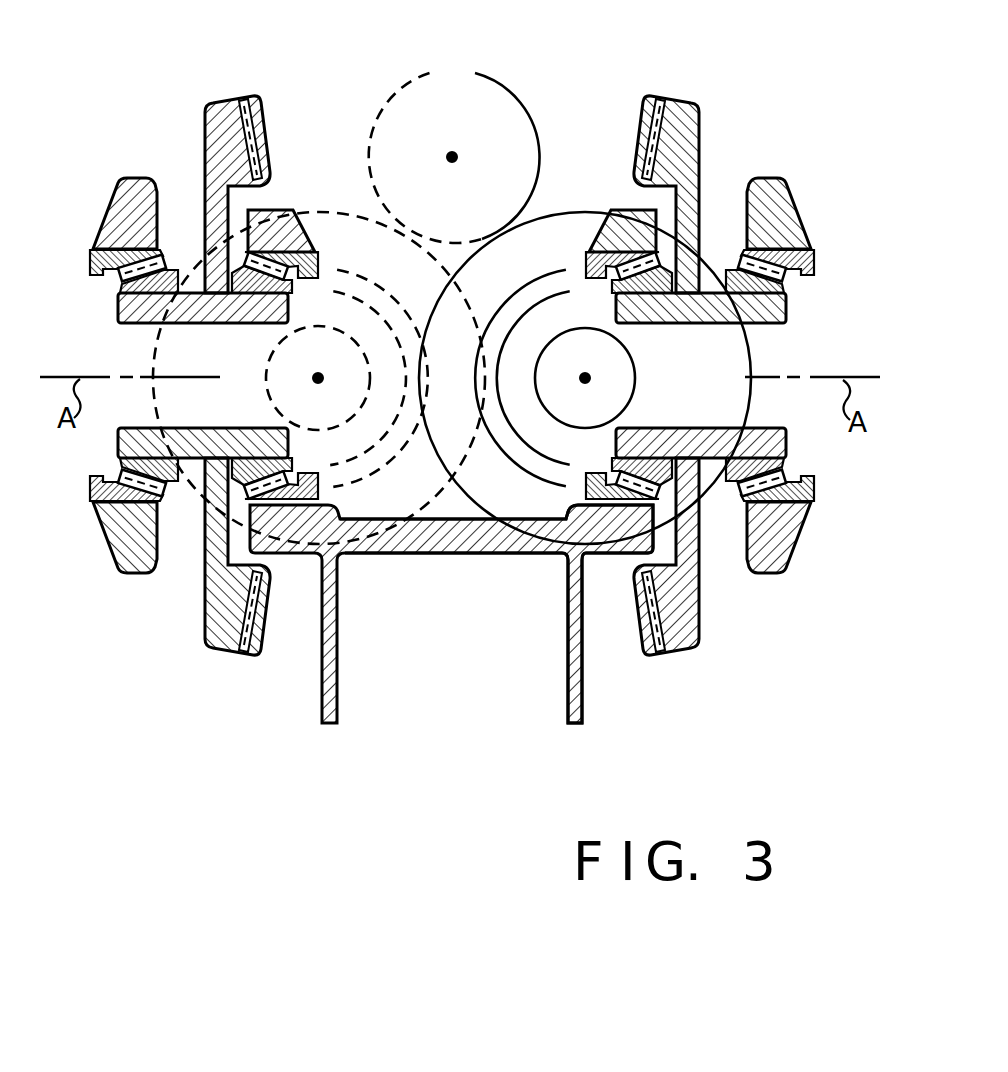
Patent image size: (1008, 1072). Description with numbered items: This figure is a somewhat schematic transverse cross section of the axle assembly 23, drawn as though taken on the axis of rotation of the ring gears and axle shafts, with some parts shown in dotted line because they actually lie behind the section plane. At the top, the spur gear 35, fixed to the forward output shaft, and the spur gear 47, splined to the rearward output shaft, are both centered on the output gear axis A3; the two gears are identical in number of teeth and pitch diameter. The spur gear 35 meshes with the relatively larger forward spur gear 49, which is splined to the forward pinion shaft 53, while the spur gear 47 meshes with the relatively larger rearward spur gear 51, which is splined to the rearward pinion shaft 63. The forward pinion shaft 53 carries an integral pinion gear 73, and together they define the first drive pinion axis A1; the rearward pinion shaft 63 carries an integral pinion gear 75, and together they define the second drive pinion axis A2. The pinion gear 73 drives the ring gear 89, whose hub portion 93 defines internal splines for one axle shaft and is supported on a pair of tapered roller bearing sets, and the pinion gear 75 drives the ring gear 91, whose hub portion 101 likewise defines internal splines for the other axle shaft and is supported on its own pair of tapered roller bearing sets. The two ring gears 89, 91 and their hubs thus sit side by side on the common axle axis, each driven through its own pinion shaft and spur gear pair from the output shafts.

The wheel and rail assembly 23 is at (462, 58).
The spur gear 35 is at (367, 140).
The spur gear 47 is at (543, 155).
The forward spur gear 49 is at (403, 523).
The rearward spur gear 51 is at (497, 520).
The forward pinion shaft 53 is at (270, 407).
The rearward pinion shaft 63 is at (640, 376).
The pinion gear 73 is at (393, 298).
The pinion gear 75 is at (507, 307).
The ring gear 89 is at (215, 197).
The ring gear 91 is at (702, 196).
The hub portion 93 is at (142, 330).
The hub portion 101 is at (762, 318).
The first drive pinion axis A1 is at (318, 378).
The second drive pinion axis A2 is at (584, 378).
The output gear axis A3 is at (450, 157).